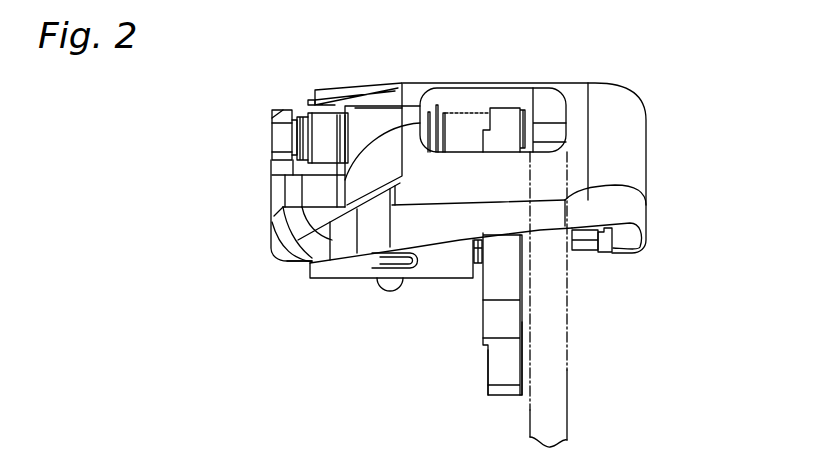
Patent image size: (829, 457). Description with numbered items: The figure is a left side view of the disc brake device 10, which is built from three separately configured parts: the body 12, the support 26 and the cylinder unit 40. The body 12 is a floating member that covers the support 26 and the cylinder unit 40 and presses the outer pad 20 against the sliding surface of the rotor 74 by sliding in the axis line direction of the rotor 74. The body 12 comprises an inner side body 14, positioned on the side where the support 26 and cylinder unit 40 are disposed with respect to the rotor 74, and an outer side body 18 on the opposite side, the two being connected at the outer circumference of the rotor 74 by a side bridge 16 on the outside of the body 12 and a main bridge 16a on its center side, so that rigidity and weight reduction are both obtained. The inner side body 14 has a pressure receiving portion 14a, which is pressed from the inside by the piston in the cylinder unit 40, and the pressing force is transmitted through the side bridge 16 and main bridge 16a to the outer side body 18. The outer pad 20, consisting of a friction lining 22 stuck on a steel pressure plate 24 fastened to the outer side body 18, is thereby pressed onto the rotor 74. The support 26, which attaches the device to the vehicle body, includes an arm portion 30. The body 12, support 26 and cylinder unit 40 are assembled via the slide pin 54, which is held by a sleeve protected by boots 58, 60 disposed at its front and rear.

The disc brake device 10 is at (613, 67).
The body 12 is at (540, 83).
The inner side body 14 is at (277, 170).
The pressure receiving portion 14a is at (293, 257).
The side bridge 16 is at (442, 195).
The main bridge 16a is at (465, 97).
The outer side body 18 is at (632, 143).
The outer pad 20 is at (600, 255).
The lining 22 is at (585, 245).
The pressure plate 24 is at (608, 242).
The support 26 is at (488, 367).
The arm portion 30 is at (492, 282).
The cylinder unit 40 is at (327, 283).
The slide pin 54 is at (282, 136).
The boot 58 is at (435, 105).
The boot 60 is at (315, 125).
The rotor 74 is at (570, 397).